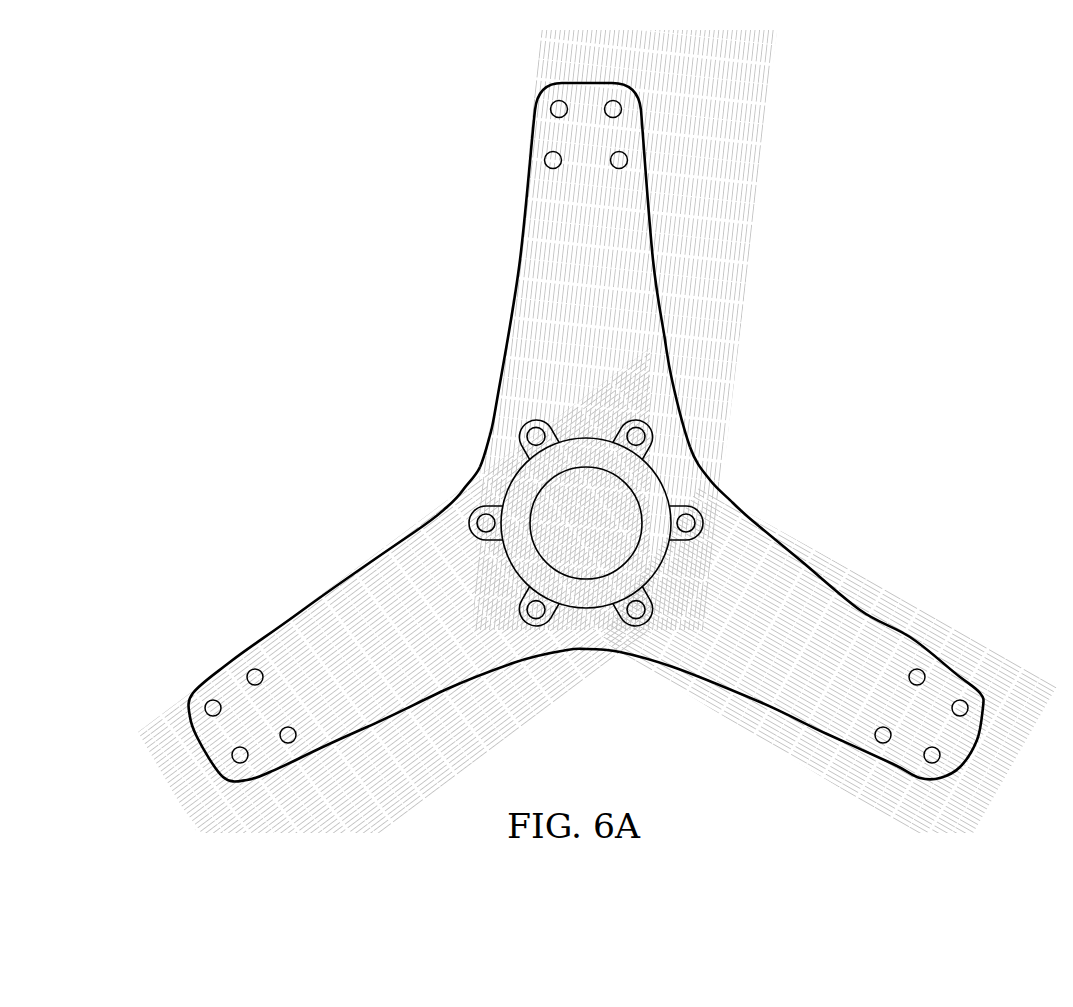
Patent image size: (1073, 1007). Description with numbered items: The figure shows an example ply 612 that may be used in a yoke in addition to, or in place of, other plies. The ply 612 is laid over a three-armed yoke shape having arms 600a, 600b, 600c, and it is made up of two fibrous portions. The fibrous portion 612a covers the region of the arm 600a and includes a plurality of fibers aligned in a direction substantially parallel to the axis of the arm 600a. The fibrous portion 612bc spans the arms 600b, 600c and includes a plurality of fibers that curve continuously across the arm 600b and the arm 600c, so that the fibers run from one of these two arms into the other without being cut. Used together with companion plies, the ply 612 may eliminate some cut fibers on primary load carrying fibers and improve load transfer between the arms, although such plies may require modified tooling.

The ply 612 is at (599, 431).
The fibrous portion 612bc is at (742, 327).
The fibrous portion 612a is at (997, 622).
The arm 600a is at (920, 582).
The arm 600b is at (510, 206).
The arm 600c is at (296, 608).